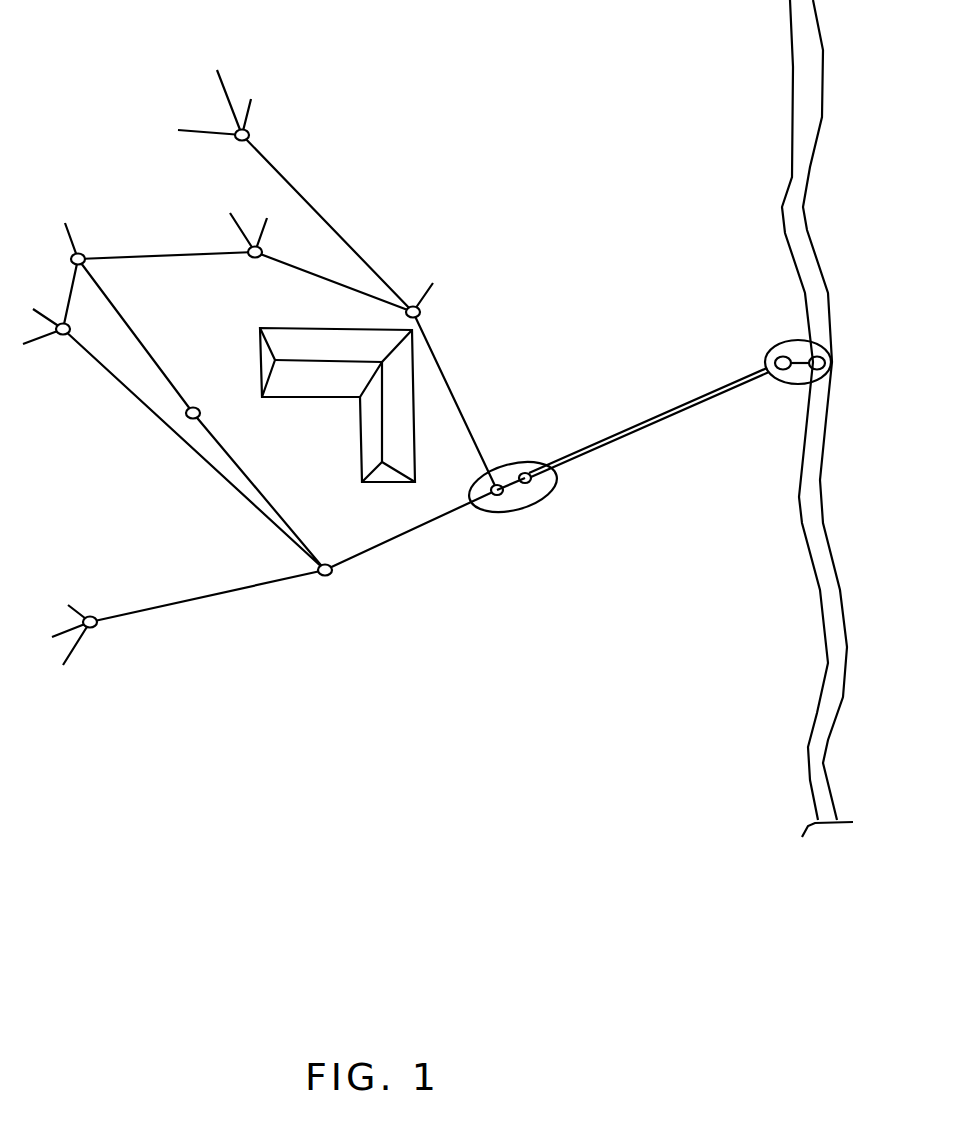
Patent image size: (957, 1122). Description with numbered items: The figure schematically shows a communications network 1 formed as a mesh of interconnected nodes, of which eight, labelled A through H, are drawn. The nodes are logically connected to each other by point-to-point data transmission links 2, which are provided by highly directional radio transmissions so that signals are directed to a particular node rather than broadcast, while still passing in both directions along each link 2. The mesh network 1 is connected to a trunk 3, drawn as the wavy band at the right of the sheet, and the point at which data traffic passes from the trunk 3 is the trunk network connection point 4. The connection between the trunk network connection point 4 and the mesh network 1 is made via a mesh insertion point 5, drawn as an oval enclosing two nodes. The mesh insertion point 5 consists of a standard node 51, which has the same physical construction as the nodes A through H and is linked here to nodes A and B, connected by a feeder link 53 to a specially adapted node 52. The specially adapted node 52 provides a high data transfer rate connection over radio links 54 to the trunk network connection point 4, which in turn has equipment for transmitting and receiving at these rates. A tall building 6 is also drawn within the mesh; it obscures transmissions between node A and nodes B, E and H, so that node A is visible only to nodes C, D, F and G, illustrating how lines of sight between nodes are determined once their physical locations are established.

The communications network 1 is at (210, 765).
The point-to-point data transmission links 2 is at (330, 215).
The trunk 3 is at (835, 577).
The trunk network connection point 4 is at (803, 340).
The mesh insertion point 5 is at (526, 493).
The standard node 51 is at (496, 506).
The specially adapted node 52 is at (526, 472).
The feeder link 53 is at (497, 484).
The radio links 54 is at (647, 427).
The tall building 6 is at (268, 327).